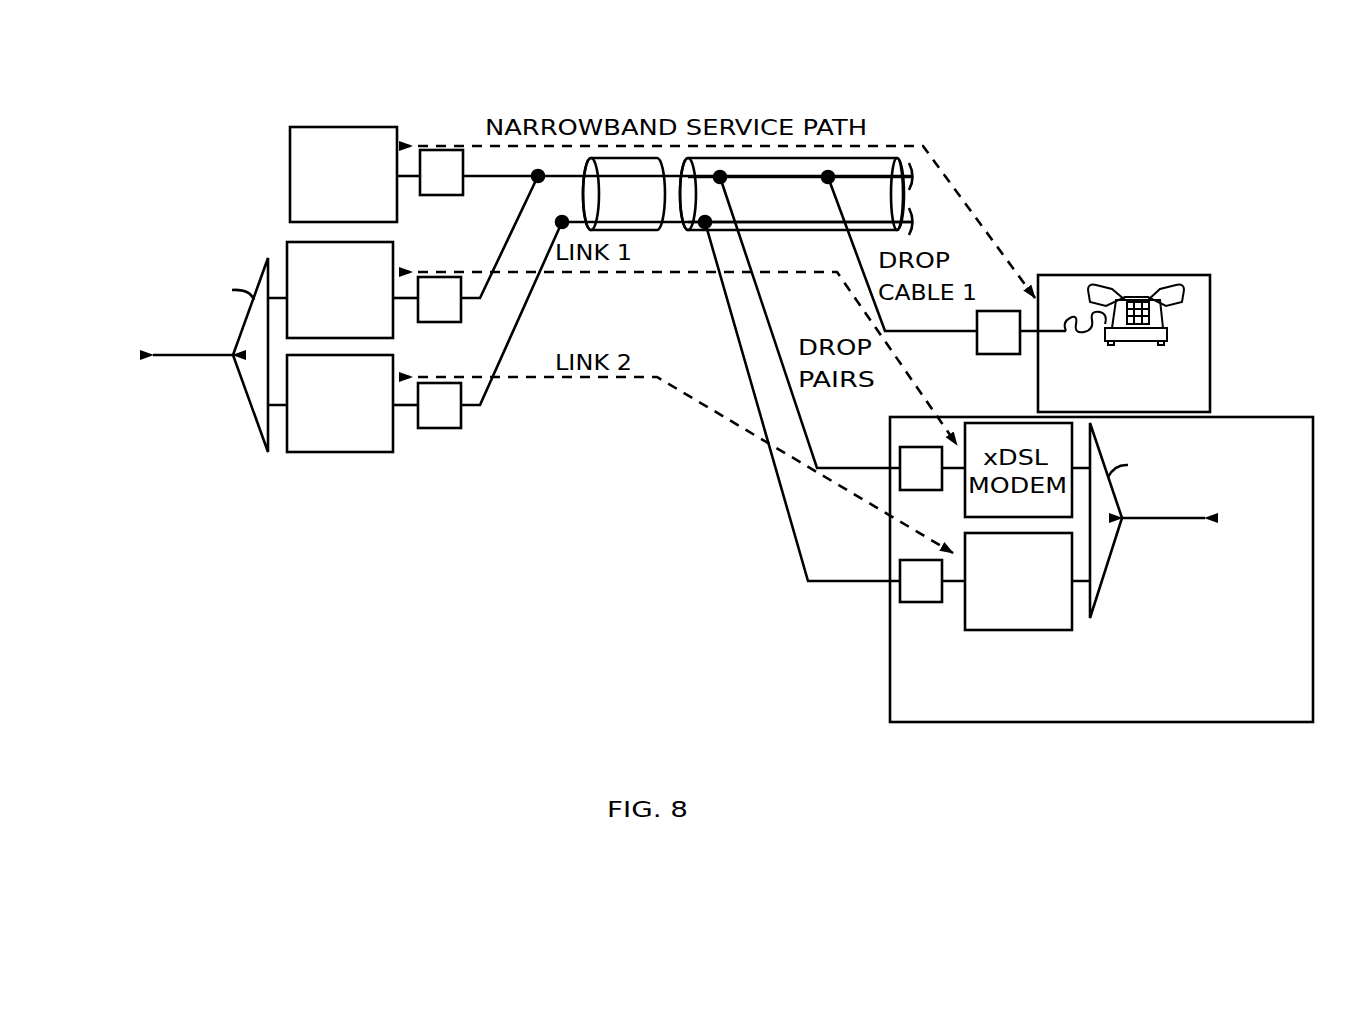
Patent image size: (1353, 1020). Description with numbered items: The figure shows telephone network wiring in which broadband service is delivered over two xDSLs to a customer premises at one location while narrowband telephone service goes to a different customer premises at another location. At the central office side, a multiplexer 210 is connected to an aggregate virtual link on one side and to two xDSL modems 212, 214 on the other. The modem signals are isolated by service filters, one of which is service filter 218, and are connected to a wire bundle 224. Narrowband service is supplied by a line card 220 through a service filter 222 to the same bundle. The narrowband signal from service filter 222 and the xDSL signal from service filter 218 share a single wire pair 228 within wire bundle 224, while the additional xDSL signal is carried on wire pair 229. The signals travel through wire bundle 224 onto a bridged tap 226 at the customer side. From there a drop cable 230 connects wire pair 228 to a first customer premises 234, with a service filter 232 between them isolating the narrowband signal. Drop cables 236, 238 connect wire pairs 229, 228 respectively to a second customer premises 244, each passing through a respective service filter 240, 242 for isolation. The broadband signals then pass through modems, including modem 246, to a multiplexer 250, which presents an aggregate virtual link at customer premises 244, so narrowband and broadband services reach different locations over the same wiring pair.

The multiplexer 210 is at (257, 425).
The xDSL modem 212 is at (345, 452).
The xDSL modem 214 is at (287, 250).
The service filter 218 is at (434, 322).
The line card 220 is at (290, 160).
The service filter 222 is at (436, 195).
The wire bundle 224 is at (638, 230).
The bridged tap 226 is at (768, 231).
The wire pair 228 is at (1280, 163).
The wire pair 229 is at (1280, 204).
The drop cable 230 is at (958, 333).
The service filter 232 is at (1000, 354).
The first customer premises 234 is at (1210, 331).
The drop cable 236 is at (800, 550).
The drop cable 238 is at (807, 440).
The service filter 240 is at (910, 602).
The service filter 242 is at (913, 491).
The second customer premises 244 is at (990, 722).
The modem 246 is at (1010, 630).
The multiplexer 250 is at (1099, 596).